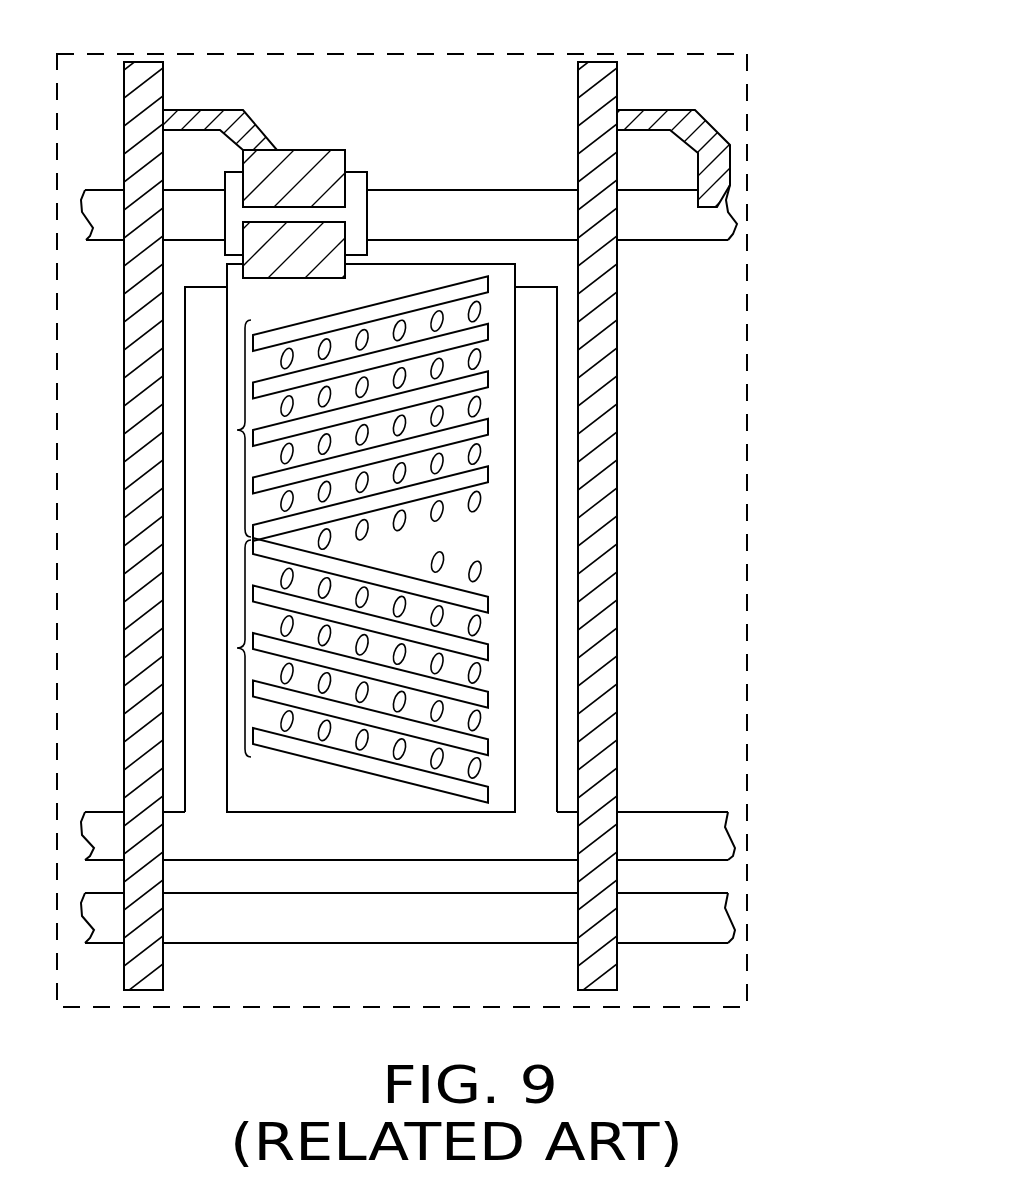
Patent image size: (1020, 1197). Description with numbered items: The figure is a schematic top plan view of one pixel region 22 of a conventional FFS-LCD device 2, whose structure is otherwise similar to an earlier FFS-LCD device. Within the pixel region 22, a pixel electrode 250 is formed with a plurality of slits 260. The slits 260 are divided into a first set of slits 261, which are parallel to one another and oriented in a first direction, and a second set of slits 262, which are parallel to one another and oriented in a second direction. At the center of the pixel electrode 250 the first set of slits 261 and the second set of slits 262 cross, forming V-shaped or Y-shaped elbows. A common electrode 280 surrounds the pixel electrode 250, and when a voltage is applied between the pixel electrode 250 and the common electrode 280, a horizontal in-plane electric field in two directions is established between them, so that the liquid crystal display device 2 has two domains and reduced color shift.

The FFS-LCD device 2 is at (486, 511).
The pixel unit 22 is at (707, 90).
The pixel electrode 250 is at (500, 280).
The slits 260 is at (571, 539).
The first set of slits 261 is at (488, 381).
The second set of slits 262 is at (528, 670).
The common electrode 280 is at (537, 342).